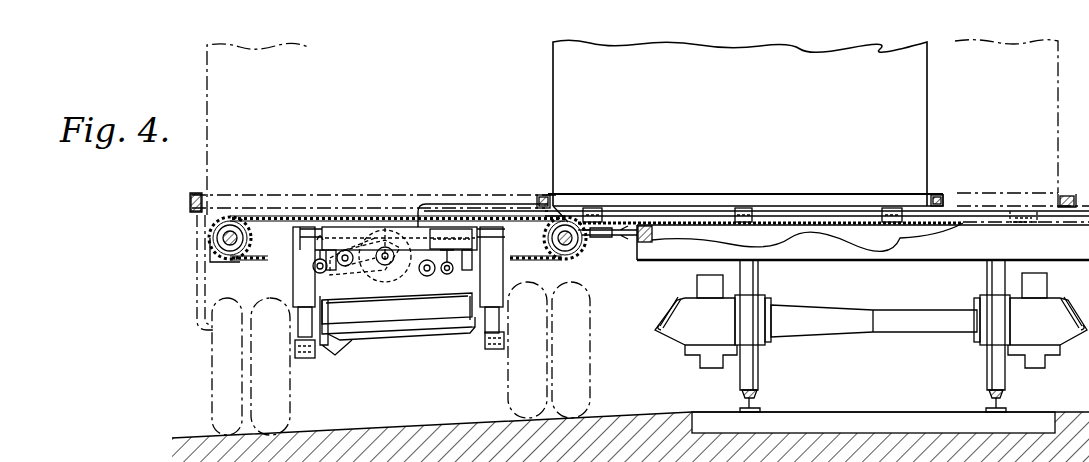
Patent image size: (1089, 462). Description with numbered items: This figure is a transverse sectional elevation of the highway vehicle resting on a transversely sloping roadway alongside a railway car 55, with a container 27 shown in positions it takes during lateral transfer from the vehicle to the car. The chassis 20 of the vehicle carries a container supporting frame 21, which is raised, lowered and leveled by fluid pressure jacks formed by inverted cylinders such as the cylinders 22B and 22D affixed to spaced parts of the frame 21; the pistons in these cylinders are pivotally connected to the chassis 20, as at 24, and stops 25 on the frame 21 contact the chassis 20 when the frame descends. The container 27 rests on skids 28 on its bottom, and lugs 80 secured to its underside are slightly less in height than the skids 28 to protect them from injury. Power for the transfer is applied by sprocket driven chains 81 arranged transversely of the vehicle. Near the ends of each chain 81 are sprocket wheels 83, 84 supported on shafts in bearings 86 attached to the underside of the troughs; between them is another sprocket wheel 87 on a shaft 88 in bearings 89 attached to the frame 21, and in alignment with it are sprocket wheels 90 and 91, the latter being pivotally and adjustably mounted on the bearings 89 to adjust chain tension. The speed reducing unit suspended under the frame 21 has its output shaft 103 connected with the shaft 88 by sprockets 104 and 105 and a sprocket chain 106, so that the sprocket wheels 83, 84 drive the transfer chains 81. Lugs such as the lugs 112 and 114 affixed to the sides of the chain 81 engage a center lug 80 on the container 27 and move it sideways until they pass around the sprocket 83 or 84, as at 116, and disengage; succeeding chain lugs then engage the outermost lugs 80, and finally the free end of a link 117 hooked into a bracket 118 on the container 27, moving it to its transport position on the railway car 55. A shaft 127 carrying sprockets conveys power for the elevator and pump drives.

The chassis 20 is at (345, 338).
The container supporting frame 21 is at (326, 227).
The inverted cylinder 22B is at (503, 277).
The inverted cylinder 22D is at (297, 284).
The pivotal connection 24 is at (303, 358).
The stops 25 is at (331, 270).
The container 27 is at (553, 81).
The skids 28 is at (617, 228).
The railway car 55 is at (674, 261).
The lugs 80 is at (594, 208).
The sprocket driven chains 81 is at (265, 216).
The sprocket wheel 83 is at (215, 249).
The sprocket wheel 84 is at (575, 253).
The bearings 86 is at (211, 241).
The sprocket wheel 87 is at (392, 265).
The shaft 88 is at (350, 254).
The bearings 89 is at (390, 250).
The sprocket wheel 90 is at (385, 256).
The sprocket wheel 91 is at (325, 272).
The output shaft 103 is at (430, 276).
The sprocket 104 is at (448, 275).
The sprocket 105 is at (397, 308).
The sprocket chain 106 is at (398, 329).
The lug 112 is at (566, 226).
The lug 114 is at (229, 262).
The disengagement point 116 is at (580, 228).
The link 117 is at (196, 297).
The bracket 118 is at (542, 196).
The shaft 127 is at (447, 238).